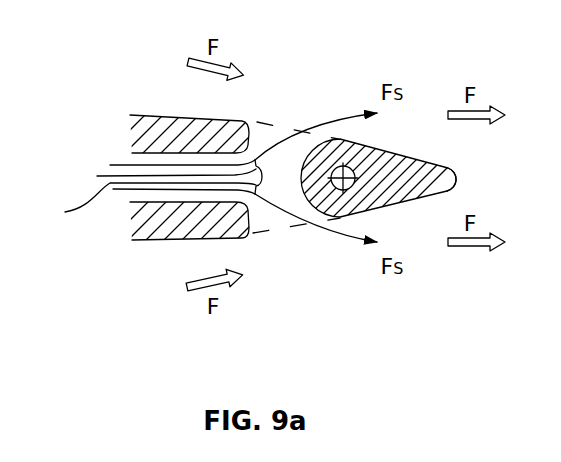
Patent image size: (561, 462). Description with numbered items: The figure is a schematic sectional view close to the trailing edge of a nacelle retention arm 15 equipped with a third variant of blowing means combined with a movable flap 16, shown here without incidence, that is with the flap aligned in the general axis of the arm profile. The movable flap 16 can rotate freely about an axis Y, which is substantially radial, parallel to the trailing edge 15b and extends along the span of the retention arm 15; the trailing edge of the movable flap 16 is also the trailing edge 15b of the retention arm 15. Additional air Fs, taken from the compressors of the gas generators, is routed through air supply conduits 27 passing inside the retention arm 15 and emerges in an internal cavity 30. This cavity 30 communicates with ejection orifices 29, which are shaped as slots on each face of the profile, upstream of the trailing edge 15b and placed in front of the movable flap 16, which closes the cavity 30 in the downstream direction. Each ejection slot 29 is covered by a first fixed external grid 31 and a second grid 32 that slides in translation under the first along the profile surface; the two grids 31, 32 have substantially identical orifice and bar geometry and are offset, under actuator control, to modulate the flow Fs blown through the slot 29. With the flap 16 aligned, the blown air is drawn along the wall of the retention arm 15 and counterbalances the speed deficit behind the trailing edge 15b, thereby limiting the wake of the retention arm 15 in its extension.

The retention arm 15 is at (168, 133).
The trailing edge 15b is at (458, 172).
The movable flap 16 is at (400, 170).
The air supply conduit 27 is at (146, 207).
The ejection orifice 29 is at (319, 114).
The internal cavity 30 is at (162, 177).
The first fixed grid 31 is at (262, 121).
The second movable grid 32 is at (274, 177).
The axis Y is at (355, 178).